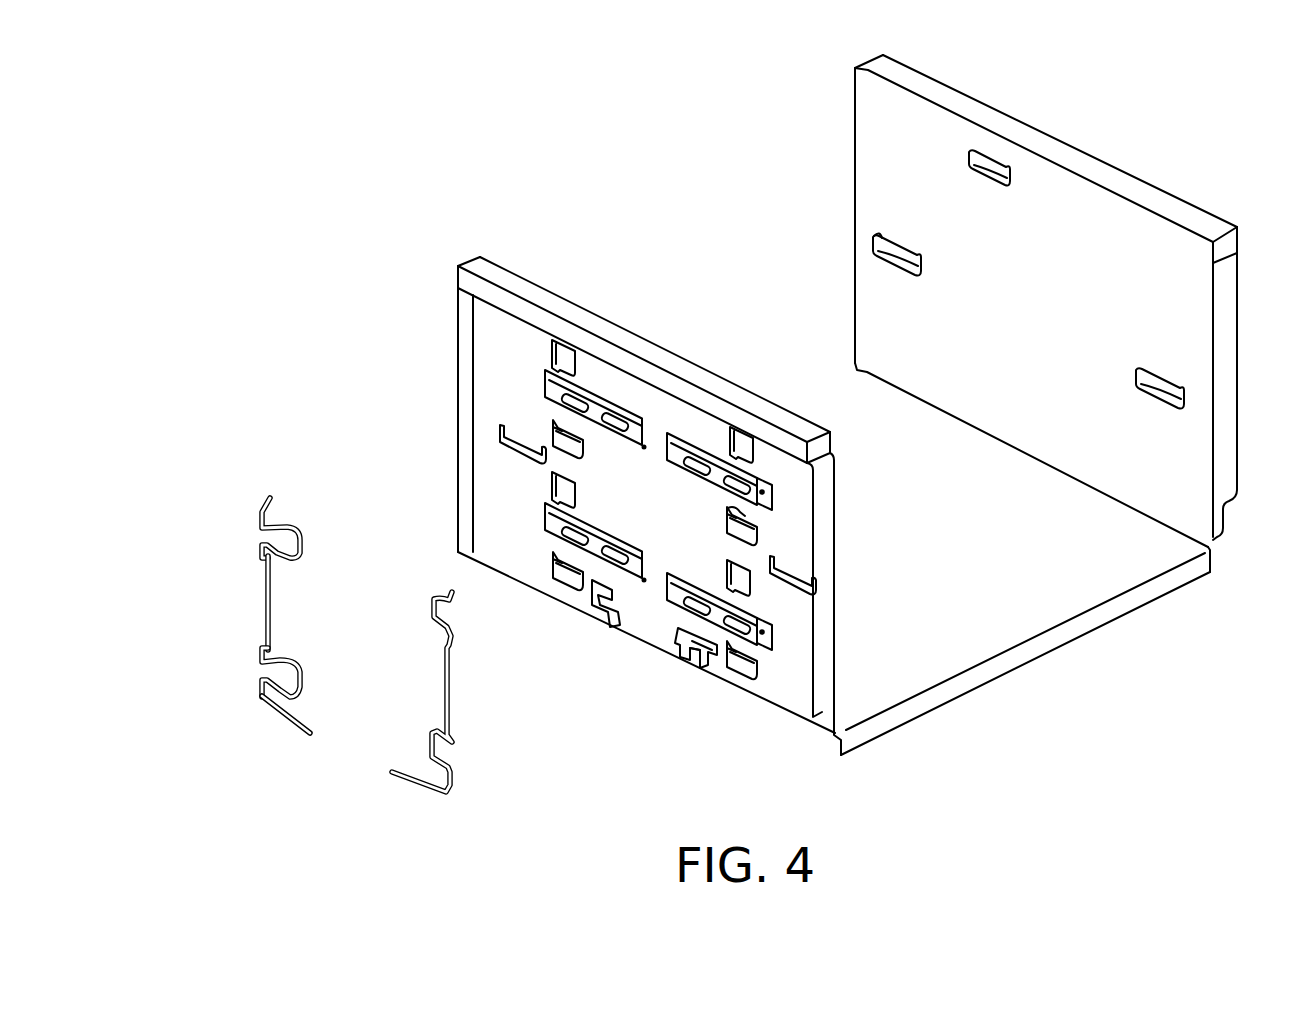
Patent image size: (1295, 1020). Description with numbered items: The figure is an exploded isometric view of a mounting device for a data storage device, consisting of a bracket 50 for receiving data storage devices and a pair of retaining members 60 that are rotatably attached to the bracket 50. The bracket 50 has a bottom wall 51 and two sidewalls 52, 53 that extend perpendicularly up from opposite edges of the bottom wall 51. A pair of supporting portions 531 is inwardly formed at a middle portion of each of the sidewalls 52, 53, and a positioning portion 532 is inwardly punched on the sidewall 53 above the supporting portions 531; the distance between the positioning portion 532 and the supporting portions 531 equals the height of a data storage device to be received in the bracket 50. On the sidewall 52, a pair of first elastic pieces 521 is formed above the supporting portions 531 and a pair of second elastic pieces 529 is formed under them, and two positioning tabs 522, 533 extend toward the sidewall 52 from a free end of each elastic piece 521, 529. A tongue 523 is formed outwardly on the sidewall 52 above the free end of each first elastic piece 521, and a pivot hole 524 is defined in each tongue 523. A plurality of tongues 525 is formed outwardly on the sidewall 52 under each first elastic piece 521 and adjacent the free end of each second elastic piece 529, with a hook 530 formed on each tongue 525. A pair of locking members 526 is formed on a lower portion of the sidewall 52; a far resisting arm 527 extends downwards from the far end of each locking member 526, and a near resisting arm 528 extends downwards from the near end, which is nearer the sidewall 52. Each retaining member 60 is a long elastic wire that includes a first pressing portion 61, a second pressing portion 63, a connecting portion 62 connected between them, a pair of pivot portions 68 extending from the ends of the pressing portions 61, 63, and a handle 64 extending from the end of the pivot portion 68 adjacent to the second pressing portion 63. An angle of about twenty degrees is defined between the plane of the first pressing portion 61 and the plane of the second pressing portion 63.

The bracket 50 is at (1160, 184).
The bottom wall 51 is at (1020, 600).
The sidewall 52 is at (495, 369).
The sidewall 53 is at (885, 137).
The first elastic piece 521 is at (685, 437).
The positioning tab 522 is at (760, 487).
The tongue 523 is at (747, 457).
The pivot hole 524 is at (733, 460).
The tongue 525 is at (727, 517).
The locking member 526 is at (597, 593).
The far resisting arm 527 is at (682, 647).
The near resisting arm 528 is at (704, 646).
The second elastic piece 529 is at (557, 533).
The hook 530 is at (728, 512).
The supporting portion 531 is at (884, 246).
The positioning portion 532 is at (984, 155).
The positioning tab 533 is at (758, 627).
The retaining member 60 is at (258, 495).
The first pressing portion 61 is at (303, 541).
The connecting portion 62 is at (271, 605).
The second pressing portion 63 is at (301, 677).
The handle 64 is at (292, 722).
The pivot portion 68 is at (257, 506).